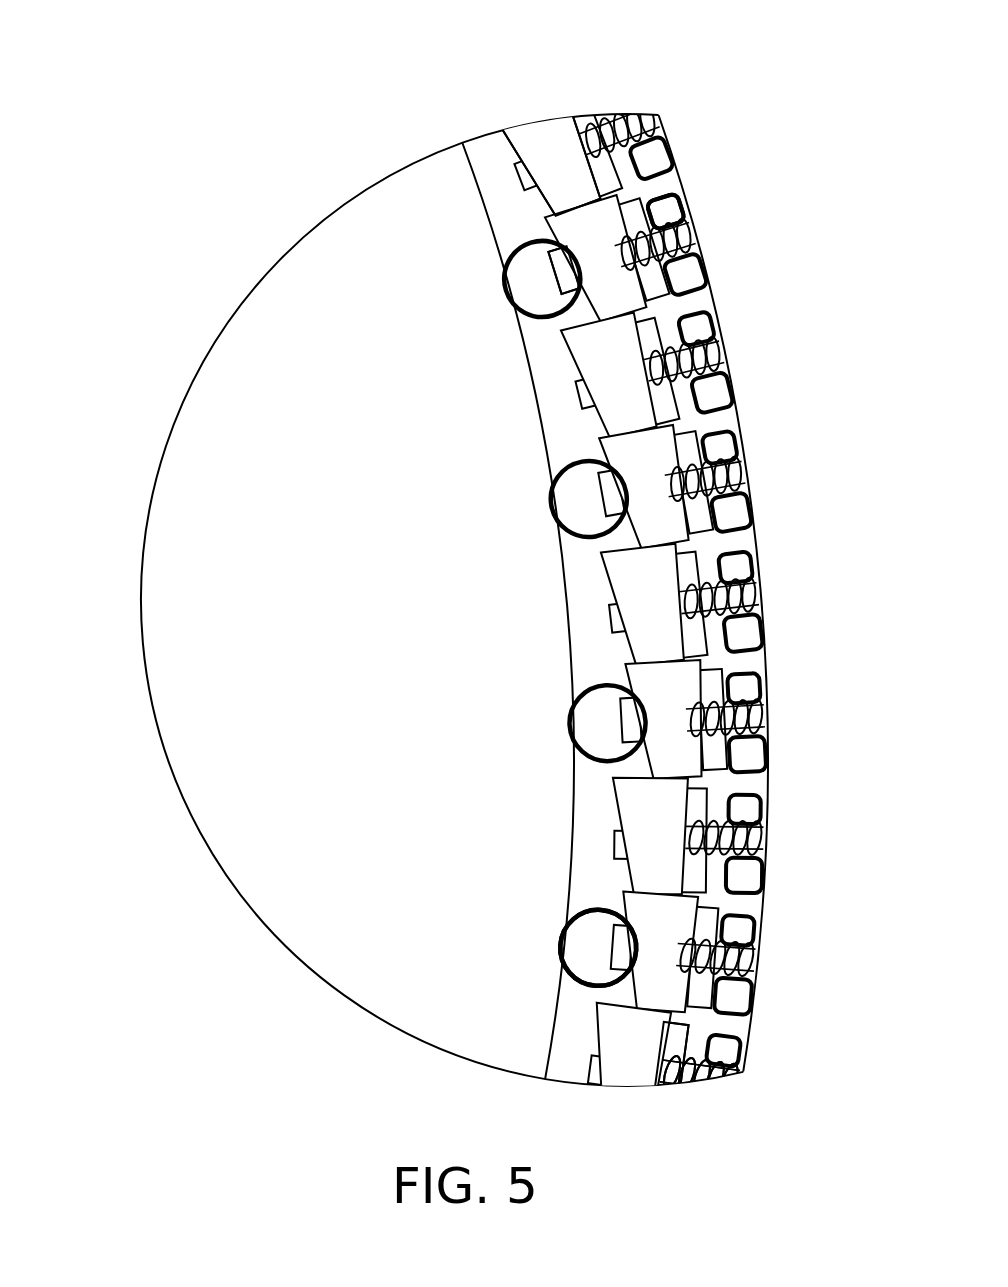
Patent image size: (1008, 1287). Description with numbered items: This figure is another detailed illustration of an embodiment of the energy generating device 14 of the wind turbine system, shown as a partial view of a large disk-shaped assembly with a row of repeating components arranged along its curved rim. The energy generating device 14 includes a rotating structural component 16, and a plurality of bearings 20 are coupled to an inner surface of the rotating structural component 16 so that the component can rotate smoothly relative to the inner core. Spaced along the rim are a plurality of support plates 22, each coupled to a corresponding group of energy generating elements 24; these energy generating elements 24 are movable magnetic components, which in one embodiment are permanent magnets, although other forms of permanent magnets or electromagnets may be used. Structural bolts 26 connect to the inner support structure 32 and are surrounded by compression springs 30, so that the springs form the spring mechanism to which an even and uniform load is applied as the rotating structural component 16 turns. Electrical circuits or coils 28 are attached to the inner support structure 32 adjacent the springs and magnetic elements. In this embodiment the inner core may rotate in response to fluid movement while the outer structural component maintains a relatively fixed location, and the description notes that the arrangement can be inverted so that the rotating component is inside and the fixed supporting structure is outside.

The energy generating device 14 is at (171, 104).
The rotating structural component 16 is at (563, 590).
The bearings 20 is at (580, 902).
The support plates 22 is at (560, 165).
The energy generating elements 24 is at (680, 1035).
The structural bolts 26 is at (562, 273).
The electrical circuits or coils 28 is at (667, 197).
The compression springs 30 is at (687, 1083).
The inner support structure 32 is at (770, 660).